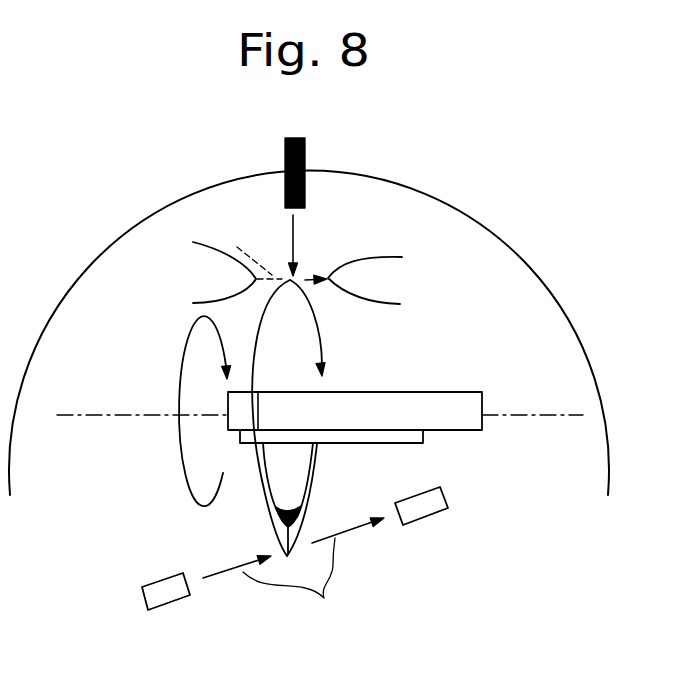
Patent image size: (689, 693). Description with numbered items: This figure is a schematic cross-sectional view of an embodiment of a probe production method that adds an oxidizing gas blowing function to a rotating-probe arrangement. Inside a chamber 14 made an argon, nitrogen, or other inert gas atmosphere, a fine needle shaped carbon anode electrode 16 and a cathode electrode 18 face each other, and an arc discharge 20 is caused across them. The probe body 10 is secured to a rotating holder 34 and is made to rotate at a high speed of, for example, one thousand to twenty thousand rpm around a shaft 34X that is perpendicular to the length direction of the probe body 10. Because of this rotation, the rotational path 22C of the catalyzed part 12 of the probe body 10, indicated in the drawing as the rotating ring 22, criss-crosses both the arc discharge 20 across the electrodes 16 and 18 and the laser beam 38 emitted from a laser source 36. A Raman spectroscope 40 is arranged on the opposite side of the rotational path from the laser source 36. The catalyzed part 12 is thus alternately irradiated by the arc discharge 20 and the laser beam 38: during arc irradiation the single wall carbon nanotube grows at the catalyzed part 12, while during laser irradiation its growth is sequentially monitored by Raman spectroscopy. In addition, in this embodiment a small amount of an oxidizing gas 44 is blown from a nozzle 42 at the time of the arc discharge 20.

The probe body 10 is at (298, 462).
The catalyzed part 12 is at (312, 513).
The chamber 14 is at (450, 203).
The carbon anode electrode 16 is at (211, 265).
The cathode electrode 18 is at (386, 268).
The arc discharge 20 is at (251, 249).
The plasma arc / ring 22 is at (280, 540).
The rotational path 22C is at (318, 333).
The rotating holder 34 is at (425, 403).
The rotation axis 34X is at (117, 413).
The laser source 36 is at (168, 595).
The laser beam 38 is at (301, 587).
The Raman spectroscope 40 is at (423, 508).
The nozzle 42 is at (305, 153).
The oxidizing gas 44 is at (295, 232).